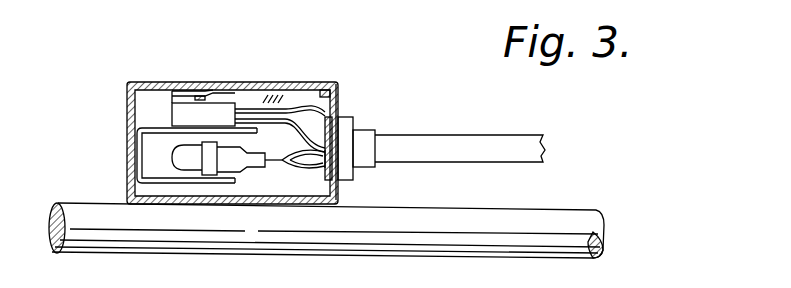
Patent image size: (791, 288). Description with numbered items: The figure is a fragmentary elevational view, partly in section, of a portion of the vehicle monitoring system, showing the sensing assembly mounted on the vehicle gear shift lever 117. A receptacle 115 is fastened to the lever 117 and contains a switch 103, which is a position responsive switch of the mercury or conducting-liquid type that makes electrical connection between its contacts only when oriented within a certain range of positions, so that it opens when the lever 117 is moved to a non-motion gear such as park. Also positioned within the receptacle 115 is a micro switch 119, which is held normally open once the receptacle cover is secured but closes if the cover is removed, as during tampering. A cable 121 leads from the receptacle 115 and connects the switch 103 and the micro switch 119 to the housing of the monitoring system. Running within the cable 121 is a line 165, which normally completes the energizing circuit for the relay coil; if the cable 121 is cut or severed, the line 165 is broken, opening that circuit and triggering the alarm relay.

The switch 103 is at (185, 165).
The receptacle 115 is at (252, 83).
The vehicle gear shift lever 117 is at (568, 210).
The micro switch 119 is at (182, 112).
The cable 121 is at (453, 140).
The line 165 is at (326, 83).